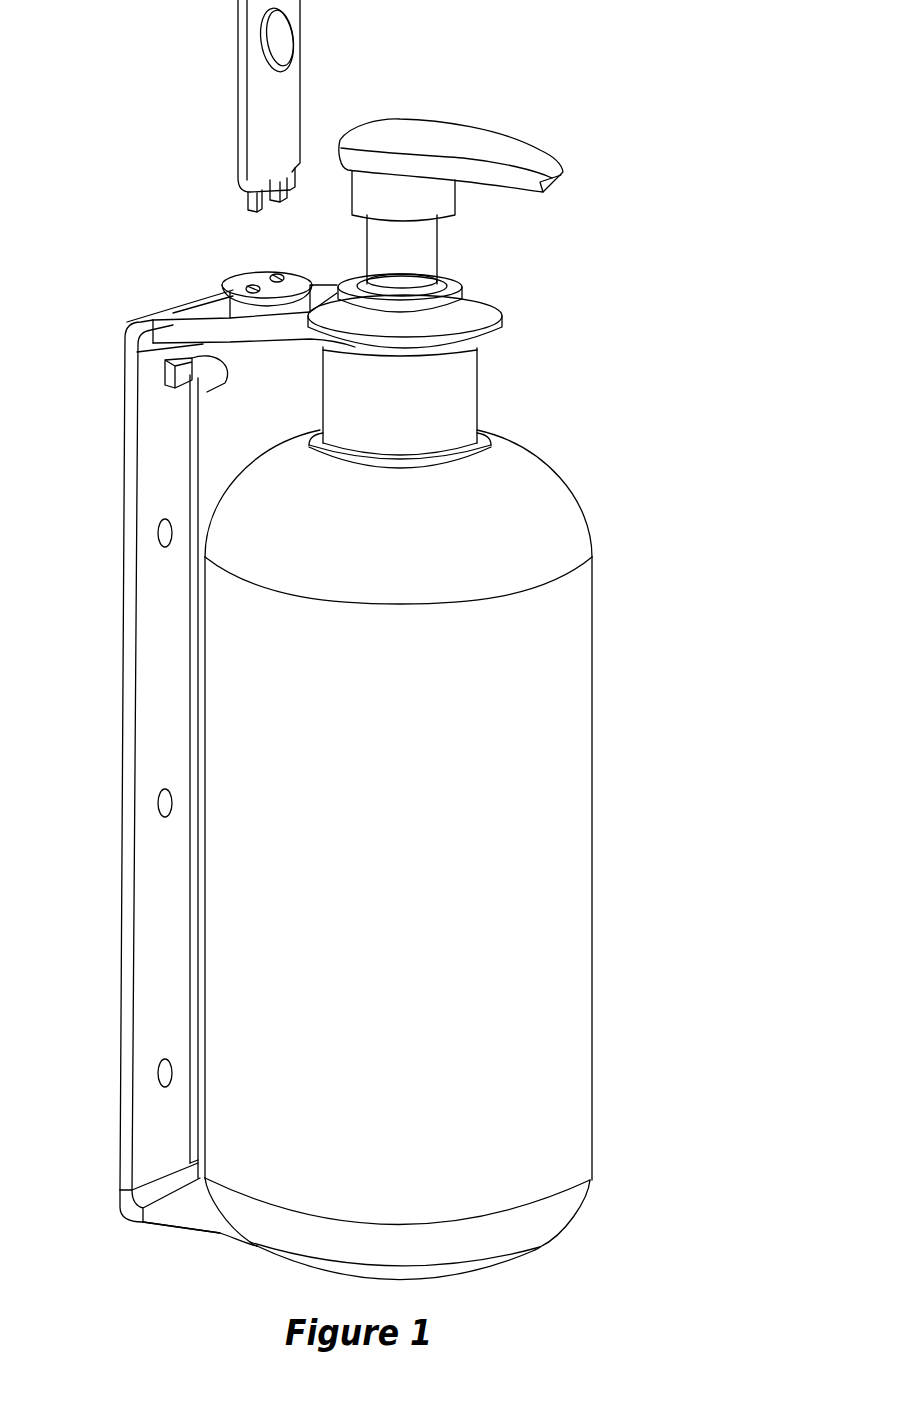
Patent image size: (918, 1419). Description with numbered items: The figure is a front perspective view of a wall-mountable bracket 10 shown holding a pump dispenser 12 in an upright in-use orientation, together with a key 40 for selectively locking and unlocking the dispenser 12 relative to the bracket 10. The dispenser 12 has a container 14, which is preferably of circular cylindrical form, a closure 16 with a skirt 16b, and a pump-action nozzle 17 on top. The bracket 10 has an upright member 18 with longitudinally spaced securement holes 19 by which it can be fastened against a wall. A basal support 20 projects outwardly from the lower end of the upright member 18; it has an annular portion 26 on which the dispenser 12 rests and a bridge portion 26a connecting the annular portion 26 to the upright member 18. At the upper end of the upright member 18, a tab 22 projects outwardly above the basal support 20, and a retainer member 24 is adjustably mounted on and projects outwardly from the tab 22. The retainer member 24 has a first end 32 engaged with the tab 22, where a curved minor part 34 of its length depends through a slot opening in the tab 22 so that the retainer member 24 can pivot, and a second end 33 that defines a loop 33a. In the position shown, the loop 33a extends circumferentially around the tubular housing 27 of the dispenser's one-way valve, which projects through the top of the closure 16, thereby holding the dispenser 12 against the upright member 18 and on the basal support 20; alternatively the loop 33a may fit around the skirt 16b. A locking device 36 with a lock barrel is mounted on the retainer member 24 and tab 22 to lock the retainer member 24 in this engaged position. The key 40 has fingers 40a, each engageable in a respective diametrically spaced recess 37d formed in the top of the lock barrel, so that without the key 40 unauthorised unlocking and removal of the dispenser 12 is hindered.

The wall-mountable bracket 10 is at (100, 740).
The pump dispenser 12 is at (652, 784).
The container 14 is at (606, 860).
The closure 16 is at (494, 403).
The skirt 16b is at (403, 375).
The pump-action nozzle 17 is at (500, 126).
The upright member 18 is at (160, 677).
The securement holes 19 is at (160, 533).
The basal support 20 is at (512, 1266).
The tab 22 is at (272, 362).
The retainer member 24 is at (508, 296).
The annular portion 26 is at (282, 1257).
The bridge portion 26a is at (190, 1222).
The tubular housing 27 is at (453, 290).
The first end 32 is at (175, 362).
The second end 33 is at (516, 318).
The loop 33a is at (468, 312).
The minor part 34 is at (192, 347).
The locking device 36 is at (246, 272).
The recesses 37d is at (238, 277).
The key 40 is at (205, 78).
The fingers 40a is at (272, 195).